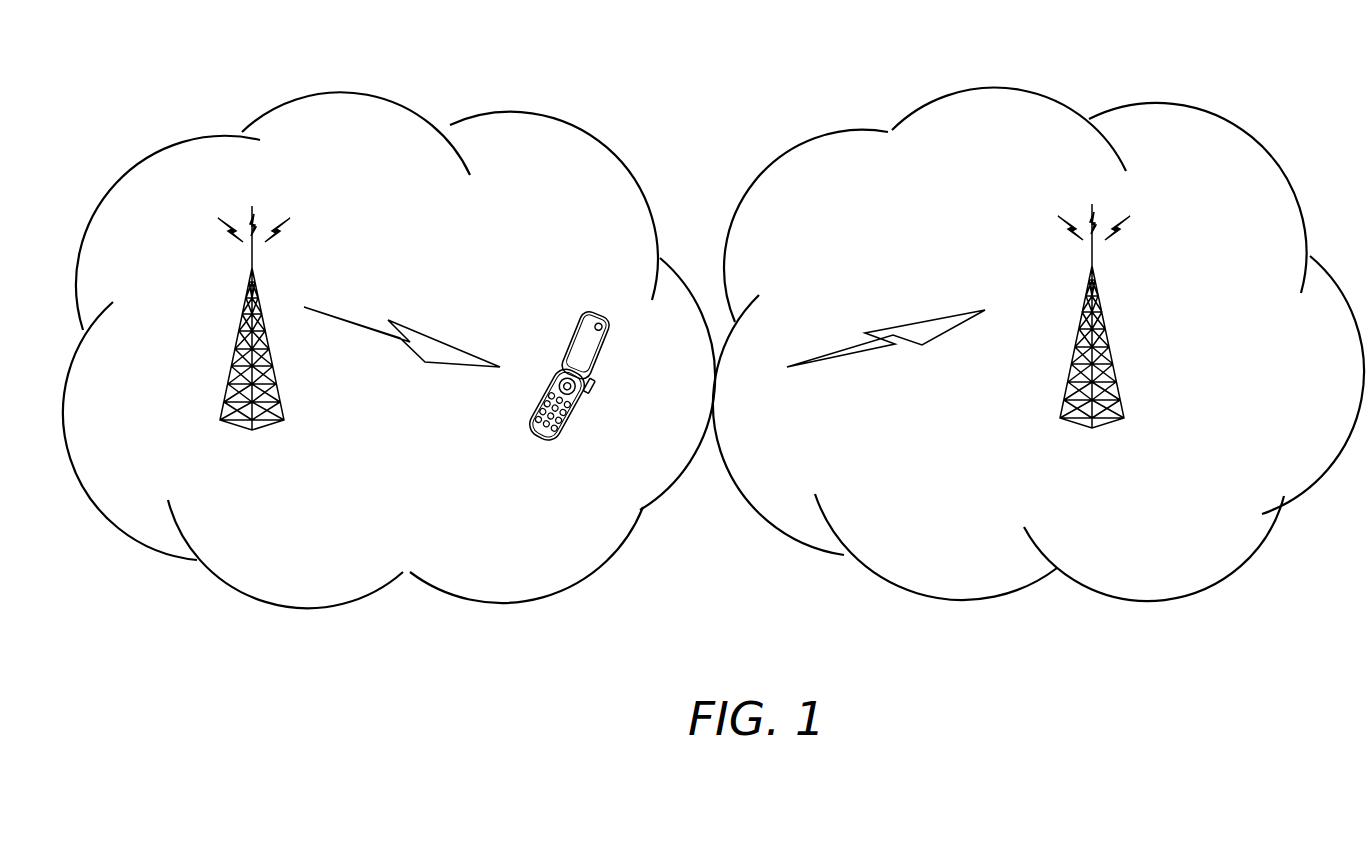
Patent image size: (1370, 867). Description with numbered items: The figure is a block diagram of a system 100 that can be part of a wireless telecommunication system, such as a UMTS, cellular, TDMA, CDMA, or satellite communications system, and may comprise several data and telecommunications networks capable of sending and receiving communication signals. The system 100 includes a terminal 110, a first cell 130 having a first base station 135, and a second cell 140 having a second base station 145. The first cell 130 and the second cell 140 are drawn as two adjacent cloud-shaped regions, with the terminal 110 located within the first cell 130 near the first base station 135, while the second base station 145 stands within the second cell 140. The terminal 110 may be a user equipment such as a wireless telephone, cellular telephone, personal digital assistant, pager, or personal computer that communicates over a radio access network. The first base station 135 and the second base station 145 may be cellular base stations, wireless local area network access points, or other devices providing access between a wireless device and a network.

The system 100 is at (1287, 66).
The terminal 110 is at (589, 320).
The first cell 130 is at (317, 93).
The first base station 135 is at (239, 320).
The second cell 140 is at (952, 93).
The second base station 145 is at (1104, 322).